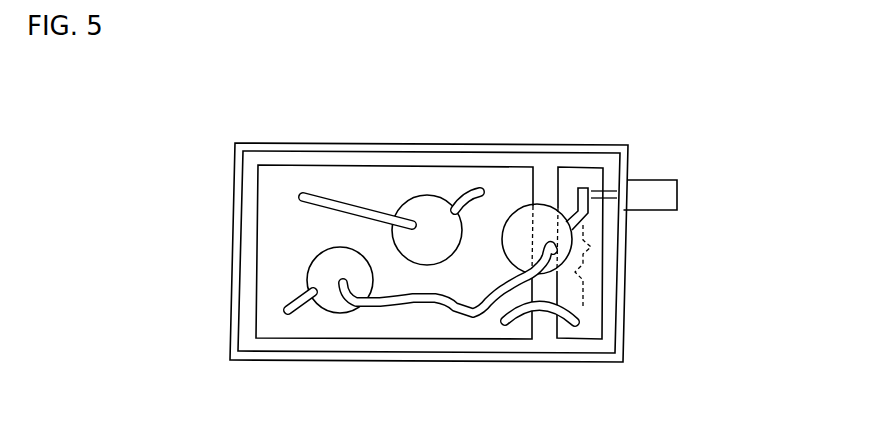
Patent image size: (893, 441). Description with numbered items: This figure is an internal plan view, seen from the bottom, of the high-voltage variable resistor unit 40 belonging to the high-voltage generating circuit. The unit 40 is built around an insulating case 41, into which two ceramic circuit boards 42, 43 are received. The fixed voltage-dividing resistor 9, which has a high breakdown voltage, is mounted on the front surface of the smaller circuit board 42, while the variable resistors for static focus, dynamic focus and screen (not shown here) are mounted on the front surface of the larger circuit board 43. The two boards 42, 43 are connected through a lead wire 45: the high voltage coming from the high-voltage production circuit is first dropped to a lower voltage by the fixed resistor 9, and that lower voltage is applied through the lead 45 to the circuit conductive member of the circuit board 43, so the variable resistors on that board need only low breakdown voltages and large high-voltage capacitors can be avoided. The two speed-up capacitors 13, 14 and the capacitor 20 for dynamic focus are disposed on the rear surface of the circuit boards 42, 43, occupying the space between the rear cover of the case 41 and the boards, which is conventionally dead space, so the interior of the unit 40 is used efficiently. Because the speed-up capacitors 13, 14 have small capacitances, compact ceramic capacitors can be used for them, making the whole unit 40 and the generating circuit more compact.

The high-voltage variable resistor unit 40 is at (213, 150).
The insulating case 41 is at (481, 362).
The circuit board 42 is at (577, 178).
The circuit board 43 is at (503, 182).
The capacitor for dynamic focus 20 is at (429, 210).
The speed-up capacitor 14 is at (325, 313).
The speed-up capacitor 13 is at (568, 253).
The fixed voltage-dividing resistor 9 is at (600, 293).
The lead wire 45 is at (540, 312).